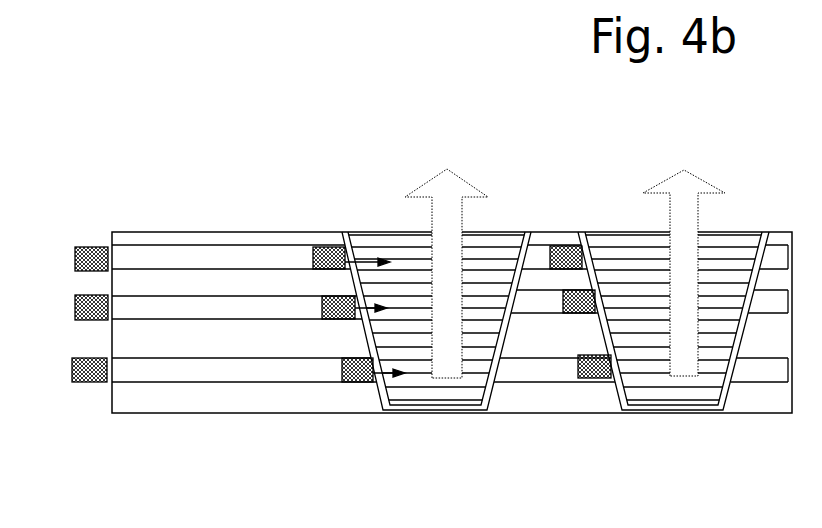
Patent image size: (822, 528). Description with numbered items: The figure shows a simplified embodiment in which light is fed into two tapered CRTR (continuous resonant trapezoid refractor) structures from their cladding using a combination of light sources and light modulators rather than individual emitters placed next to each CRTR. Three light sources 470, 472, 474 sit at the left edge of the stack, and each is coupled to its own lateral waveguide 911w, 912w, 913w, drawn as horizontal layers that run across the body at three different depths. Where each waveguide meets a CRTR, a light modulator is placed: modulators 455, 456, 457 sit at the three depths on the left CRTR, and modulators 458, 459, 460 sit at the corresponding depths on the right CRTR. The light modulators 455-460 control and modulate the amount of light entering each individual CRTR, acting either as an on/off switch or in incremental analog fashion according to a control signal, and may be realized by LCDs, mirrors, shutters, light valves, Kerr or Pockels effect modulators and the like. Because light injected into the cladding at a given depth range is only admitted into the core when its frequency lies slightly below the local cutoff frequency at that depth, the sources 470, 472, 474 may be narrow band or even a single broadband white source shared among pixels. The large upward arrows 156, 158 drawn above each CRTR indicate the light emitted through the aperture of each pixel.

The upward light/flow arrow (first aperture) 156 is at (446, 259).
The upward light/flow arrow (second aperture) 158 is at (684, 257).
The light modulator 455 is at (313, 248).
The light modulator 456 is at (322, 298).
The light modulator 457 is at (340, 385).
The light modulator 458 is at (552, 246).
The light modulator 459 is at (565, 314).
The light modulator 460 is at (612, 380).
The light source 470 is at (63, 258).
The light source 472 is at (63, 306).
The light source 474 is at (62, 370).
The lateral waveguide 911w is at (450, 257).
The lateral waveguide 912w is at (450, 304).
The lateral waveguide 913w is at (450, 370).